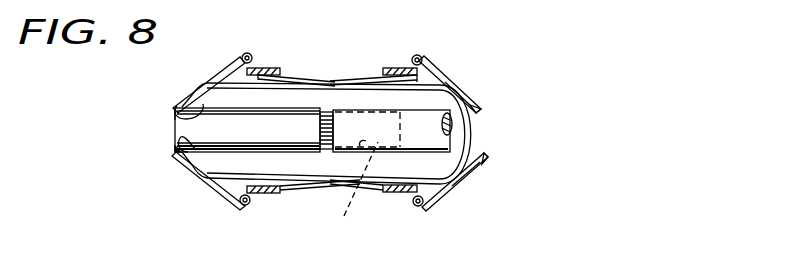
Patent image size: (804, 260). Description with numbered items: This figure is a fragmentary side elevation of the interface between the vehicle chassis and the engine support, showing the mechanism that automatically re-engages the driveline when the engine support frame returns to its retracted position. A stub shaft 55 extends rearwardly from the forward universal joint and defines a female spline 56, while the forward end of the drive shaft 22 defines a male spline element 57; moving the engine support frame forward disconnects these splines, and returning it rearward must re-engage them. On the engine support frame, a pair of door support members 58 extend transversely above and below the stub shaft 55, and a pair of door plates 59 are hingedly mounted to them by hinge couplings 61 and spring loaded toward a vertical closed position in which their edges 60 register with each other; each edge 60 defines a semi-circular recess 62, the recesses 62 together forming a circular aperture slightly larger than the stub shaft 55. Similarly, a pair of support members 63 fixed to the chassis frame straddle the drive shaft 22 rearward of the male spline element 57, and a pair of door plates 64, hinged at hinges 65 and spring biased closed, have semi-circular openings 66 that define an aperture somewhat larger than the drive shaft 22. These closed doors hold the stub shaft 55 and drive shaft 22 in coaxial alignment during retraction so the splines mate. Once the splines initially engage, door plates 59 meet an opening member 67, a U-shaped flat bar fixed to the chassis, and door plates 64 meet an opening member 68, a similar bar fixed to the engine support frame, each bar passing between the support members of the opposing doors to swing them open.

The drive shaft 22 is at (177, 153).
The stub shaft 55 is at (440, 133).
The female spline 56 is at (361, 188).
The male spline element 57 is at (332, 110).
The door support members 58 is at (385, 70).
The door plates 59 is at (437, 66).
The edges 60 is at (481, 109).
The hinge coupling 61 is at (417, 55).
The semi-circular recess 62 is at (468, 95).
The support members 63 is at (262, 68).
The door plates 64 is at (201, 88).
The hinges 65 is at (248, 53).
The semi-circular opening 66 is at (187, 101).
The opening member 67 is at (466, 148).
The opening member 68 is at (174, 117).